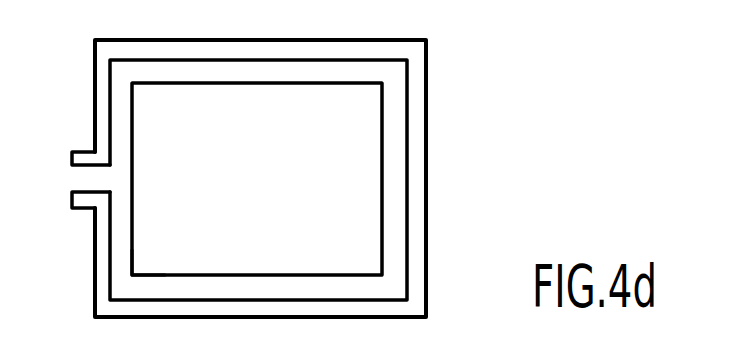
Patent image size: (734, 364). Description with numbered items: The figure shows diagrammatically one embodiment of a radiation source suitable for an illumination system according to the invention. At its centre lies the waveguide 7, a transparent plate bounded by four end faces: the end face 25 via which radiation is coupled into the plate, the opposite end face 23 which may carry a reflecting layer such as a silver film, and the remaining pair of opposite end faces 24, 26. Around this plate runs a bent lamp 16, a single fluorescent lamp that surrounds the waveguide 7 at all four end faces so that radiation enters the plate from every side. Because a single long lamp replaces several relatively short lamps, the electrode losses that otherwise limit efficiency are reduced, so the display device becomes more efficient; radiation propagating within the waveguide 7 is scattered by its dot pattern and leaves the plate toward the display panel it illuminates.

The bent lamp 16 is at (215, 55).
The end face 23 is at (382, 118).
The end face 24 is at (312, 83).
The waveguide 7 is at (358, 180).
The end face 25 is at (132, 176).
The end face 26 is at (147, 278).